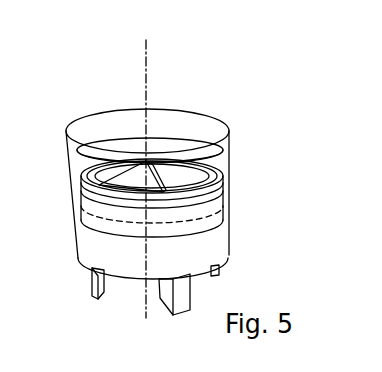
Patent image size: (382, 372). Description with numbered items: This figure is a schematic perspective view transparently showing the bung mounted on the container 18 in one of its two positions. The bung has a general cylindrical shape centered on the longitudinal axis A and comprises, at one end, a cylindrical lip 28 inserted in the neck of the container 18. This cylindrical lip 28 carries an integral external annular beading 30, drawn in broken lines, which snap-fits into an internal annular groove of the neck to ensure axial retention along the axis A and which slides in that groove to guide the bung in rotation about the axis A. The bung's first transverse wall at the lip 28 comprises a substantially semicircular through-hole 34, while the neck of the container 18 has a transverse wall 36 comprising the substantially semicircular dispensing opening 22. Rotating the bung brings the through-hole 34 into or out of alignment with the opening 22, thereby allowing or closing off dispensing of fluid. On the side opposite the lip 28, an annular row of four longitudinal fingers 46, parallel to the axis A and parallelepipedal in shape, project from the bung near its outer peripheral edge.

The longitudinal axis A is at (146, 60).
The container 18 is at (218, 112).
The dispensing opening 22 is at (86, 155).
The cylindrical lip 28 is at (217, 197).
The external annular beading 30 is at (205, 222).
The through-hole 34 is at (182, 175).
The transverse wall 36 is at (92, 165).
The longitudinal fingers 46 is at (157, 305).